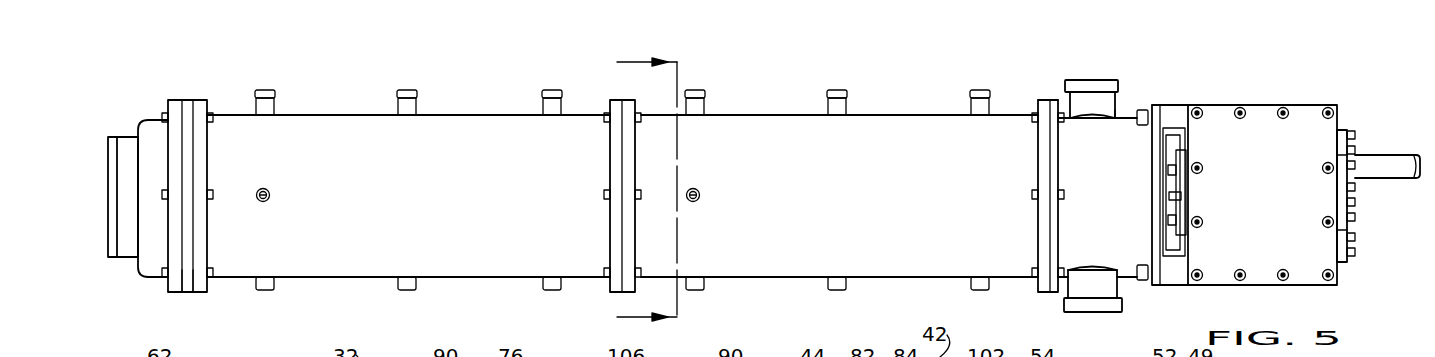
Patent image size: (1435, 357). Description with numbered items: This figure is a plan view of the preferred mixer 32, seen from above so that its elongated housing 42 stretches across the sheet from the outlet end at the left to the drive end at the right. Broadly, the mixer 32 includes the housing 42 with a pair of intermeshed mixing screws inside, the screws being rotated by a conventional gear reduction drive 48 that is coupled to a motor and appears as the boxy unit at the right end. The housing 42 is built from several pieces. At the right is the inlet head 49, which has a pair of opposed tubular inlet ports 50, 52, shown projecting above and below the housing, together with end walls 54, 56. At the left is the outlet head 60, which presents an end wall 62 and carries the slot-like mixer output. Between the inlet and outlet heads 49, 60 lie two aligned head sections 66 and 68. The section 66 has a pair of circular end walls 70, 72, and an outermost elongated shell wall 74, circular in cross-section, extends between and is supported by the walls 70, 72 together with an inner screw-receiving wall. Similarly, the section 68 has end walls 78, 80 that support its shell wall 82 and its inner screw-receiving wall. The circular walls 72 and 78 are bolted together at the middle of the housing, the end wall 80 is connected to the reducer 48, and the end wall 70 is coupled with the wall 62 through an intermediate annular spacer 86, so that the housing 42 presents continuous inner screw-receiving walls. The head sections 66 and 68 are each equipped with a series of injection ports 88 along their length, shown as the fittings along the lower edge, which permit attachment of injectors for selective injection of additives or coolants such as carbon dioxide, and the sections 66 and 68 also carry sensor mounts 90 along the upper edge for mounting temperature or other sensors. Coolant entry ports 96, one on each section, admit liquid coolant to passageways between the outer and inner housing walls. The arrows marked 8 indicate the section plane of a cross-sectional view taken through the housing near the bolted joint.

The section line 8- 8 is at (664, 196).
The mixer 32 is at (1095, 68).
The housing 42 is at (915, 75).
The gear reduction drive 48 is at (1286, 195).
The inlet head 49 is at (1133, 112).
The inlet port 50 is at (1121, 300).
The inlet port 52 is at (1122, 118).
The end wall 54 is at (1052, 100).
The end wall 56 is at (1153, 108).
The outlet head 60 is at (148, 124).
The end wall 62 is at (177, 104).
The head section 66 is at (332, 105).
The head section 68 is at (747, 107).
The end wall 70 is at (200, 293).
The end wall 72 is at (618, 292).
The shell wall 74 is at (412, 192).
The end wall 78 is at (626, 238).
The end wall 80 is at (1059, 239).
The shell wall 82 is at (855, 192).
The annular spacer 86 is at (186, 293).
The injection ports 88 is at (408, 291).
The sensor mounts 90 is at (545, 100).
The coolant entry ports 96 is at (271, 190).